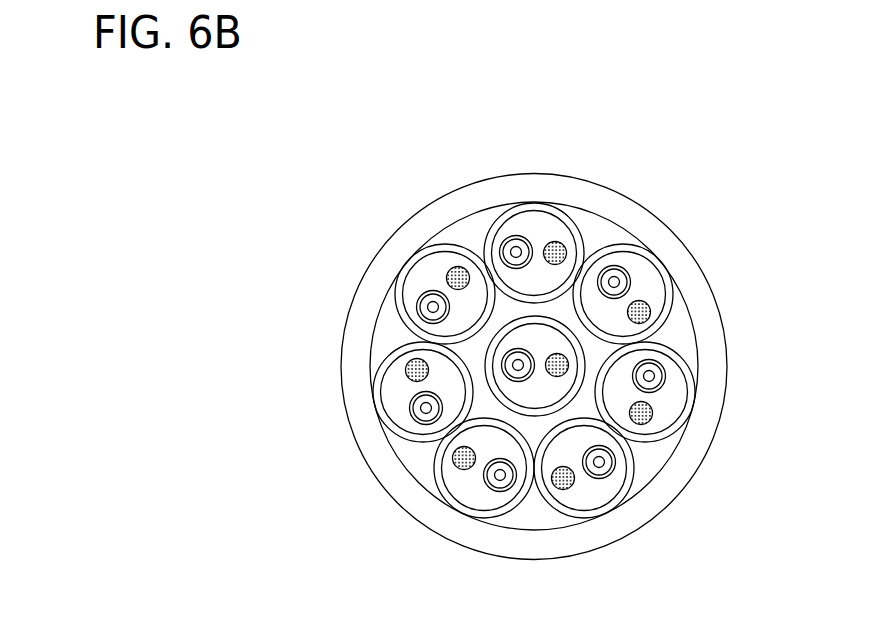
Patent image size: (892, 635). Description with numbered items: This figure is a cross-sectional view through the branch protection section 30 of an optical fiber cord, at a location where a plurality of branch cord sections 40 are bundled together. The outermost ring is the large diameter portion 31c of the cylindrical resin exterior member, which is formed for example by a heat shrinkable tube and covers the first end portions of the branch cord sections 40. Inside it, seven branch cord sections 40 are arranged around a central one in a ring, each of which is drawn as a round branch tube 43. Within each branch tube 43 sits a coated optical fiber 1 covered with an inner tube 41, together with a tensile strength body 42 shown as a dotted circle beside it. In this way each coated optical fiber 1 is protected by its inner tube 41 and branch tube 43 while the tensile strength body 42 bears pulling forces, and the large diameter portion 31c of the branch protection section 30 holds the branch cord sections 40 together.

The branch protection section 30 is at (396, 180).
The large diameter portion 31c is at (610, 205).
The branch cord section 40 is at (668, 317).
The coated optical fiber 1 is at (501, 362).
The inner tube 41 is at (512, 382).
The tensile strength body 42 is at (565, 363).
The branch tube 43 is at (533, 410).